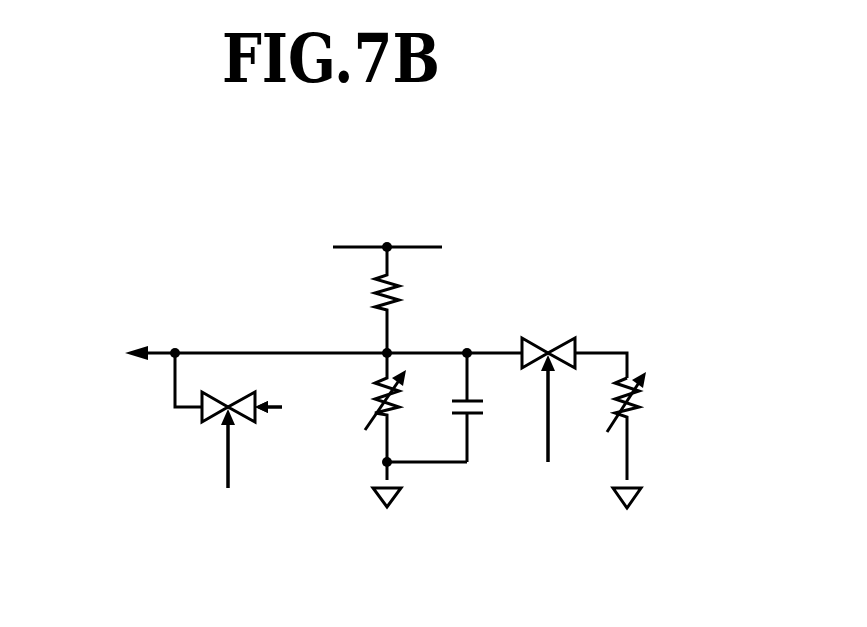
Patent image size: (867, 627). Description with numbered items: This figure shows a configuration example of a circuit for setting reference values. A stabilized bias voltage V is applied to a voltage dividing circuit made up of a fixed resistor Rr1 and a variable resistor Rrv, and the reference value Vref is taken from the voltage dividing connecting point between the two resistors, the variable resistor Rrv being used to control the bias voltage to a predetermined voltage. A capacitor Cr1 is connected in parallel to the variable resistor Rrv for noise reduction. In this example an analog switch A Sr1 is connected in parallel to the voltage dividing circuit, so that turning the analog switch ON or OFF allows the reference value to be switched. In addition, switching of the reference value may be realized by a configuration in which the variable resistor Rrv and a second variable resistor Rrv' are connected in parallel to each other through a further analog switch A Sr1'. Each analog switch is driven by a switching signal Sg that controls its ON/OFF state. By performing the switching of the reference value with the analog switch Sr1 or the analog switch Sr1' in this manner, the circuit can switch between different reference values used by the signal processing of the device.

The resistor Rr1 is at (416, 300).
The analog switch Sr1 is at (246, 420).
The variable resistor Rrv is at (410, 430).
The capacitor Cr1 is at (494, 407).
The analog switch Sr1' is at (584, 386).
The variable resistor Rrv' is at (655, 440).
The switching signal Sg is at (397, 450).
The bias voltage V is at (417, 247).
The reference value Vref is at (292, 354).
The analog switch A is at (415, 382).